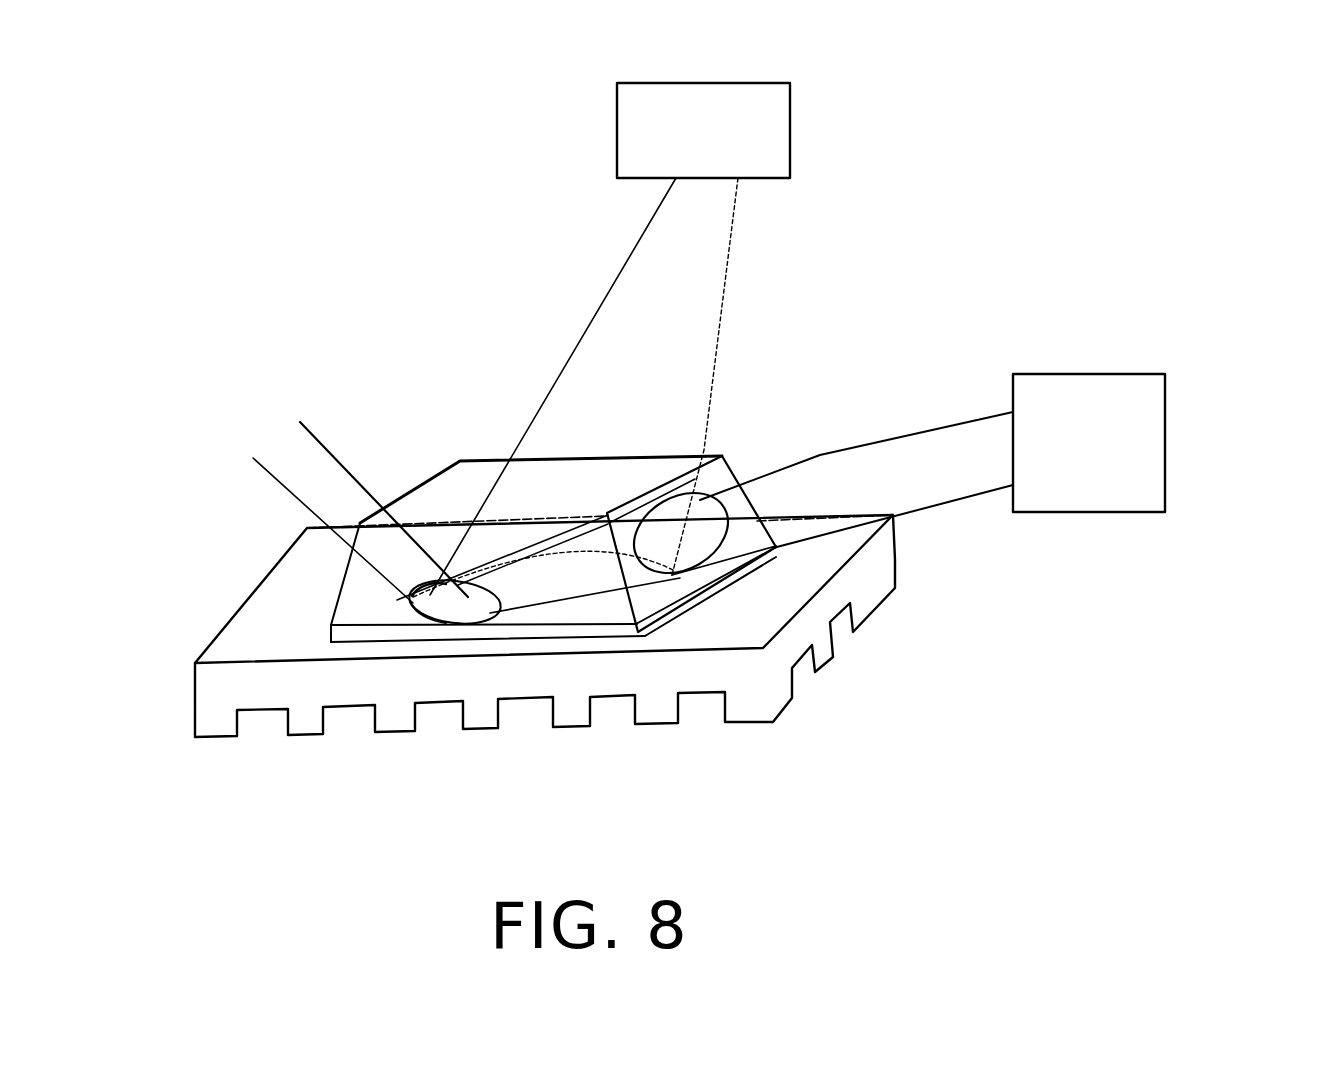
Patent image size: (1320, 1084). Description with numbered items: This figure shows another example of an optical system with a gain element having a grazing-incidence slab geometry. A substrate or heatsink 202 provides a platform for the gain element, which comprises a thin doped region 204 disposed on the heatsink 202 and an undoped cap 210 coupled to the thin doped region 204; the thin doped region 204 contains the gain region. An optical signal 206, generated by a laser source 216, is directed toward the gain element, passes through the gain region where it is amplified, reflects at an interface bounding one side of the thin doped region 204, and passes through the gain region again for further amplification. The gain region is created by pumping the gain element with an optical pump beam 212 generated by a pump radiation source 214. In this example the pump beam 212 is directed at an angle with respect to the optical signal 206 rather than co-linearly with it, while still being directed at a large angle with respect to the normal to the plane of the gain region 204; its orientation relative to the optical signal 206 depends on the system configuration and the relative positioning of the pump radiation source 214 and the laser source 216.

The substrate or heatsink 202 is at (570, 710).
The thin doped region 204 is at (398, 633).
The optical signal 206 is at (300, 465).
The undoped cap 210 is at (440, 492).
The optical pump beam 212 is at (583, 340).
The pump radiation source 214 is at (782, 113).
The laser source 216 is at (1152, 395).